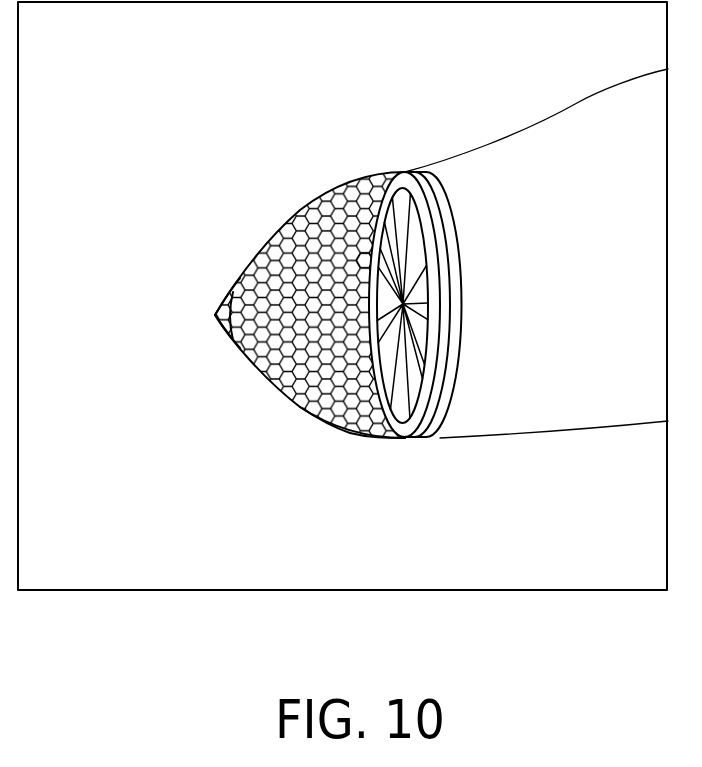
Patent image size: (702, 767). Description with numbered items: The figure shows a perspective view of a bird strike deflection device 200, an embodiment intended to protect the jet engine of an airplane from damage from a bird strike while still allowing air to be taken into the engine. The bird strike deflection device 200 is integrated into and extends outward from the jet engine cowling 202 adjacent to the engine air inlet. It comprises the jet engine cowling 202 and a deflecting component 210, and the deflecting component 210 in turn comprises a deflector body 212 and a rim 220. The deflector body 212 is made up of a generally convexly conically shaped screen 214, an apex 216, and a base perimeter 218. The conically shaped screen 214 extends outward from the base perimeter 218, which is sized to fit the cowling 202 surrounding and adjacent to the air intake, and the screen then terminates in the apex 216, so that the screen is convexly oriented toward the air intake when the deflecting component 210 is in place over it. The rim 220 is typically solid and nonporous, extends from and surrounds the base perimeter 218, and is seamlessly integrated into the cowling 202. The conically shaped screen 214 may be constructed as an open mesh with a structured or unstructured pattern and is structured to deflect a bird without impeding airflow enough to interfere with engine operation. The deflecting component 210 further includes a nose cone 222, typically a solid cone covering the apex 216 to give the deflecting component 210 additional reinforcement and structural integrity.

The bird strike deflection device 200 is at (355, 293).
The jet engine cowling 202 is at (583, 423).
The deflecting component 210 is at (293, 412).
The deflector body 212 is at (325, 433).
The conically shaped screen 214 is at (368, 407).
The apex 216 is at (215, 315).
The base perimeter 218 is at (360, 262).
The rim 220 is at (383, 190).
The nose cone 222 is at (232, 338).